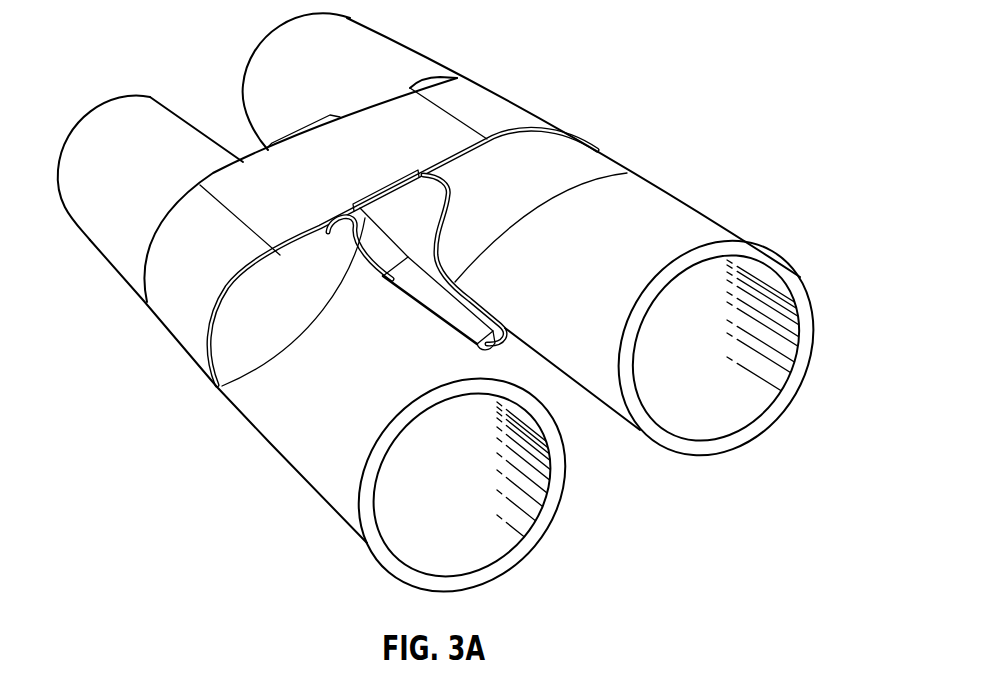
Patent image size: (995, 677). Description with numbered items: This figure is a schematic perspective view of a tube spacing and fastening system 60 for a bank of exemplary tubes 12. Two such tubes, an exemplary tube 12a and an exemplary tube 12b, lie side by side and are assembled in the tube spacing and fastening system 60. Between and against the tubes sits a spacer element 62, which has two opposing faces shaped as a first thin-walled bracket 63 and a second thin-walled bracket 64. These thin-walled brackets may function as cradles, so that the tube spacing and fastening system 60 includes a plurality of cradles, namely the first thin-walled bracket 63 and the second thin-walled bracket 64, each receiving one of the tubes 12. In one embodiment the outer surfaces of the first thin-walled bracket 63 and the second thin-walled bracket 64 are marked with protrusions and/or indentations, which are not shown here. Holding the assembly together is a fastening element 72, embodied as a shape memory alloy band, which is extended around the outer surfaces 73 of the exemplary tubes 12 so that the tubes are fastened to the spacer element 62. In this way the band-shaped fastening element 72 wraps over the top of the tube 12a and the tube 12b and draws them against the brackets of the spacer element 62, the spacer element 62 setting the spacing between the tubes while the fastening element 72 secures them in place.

The tube spacing and fastening system 60 is at (116, 33).
The exemplary tubes 12 is at (456, 323).
The exemplary tube 12a is at (323, 485).
The exemplary tube 12b is at (688, 216).
The fastening element 72 is at (528, 105).
The outer surfaces 73 is at (603, 153).
The second thin-walled bracket 64 is at (627, 172).
The first thin-walled bracket 63 is at (217, 385).
The spacer element 62 is at (498, 350).